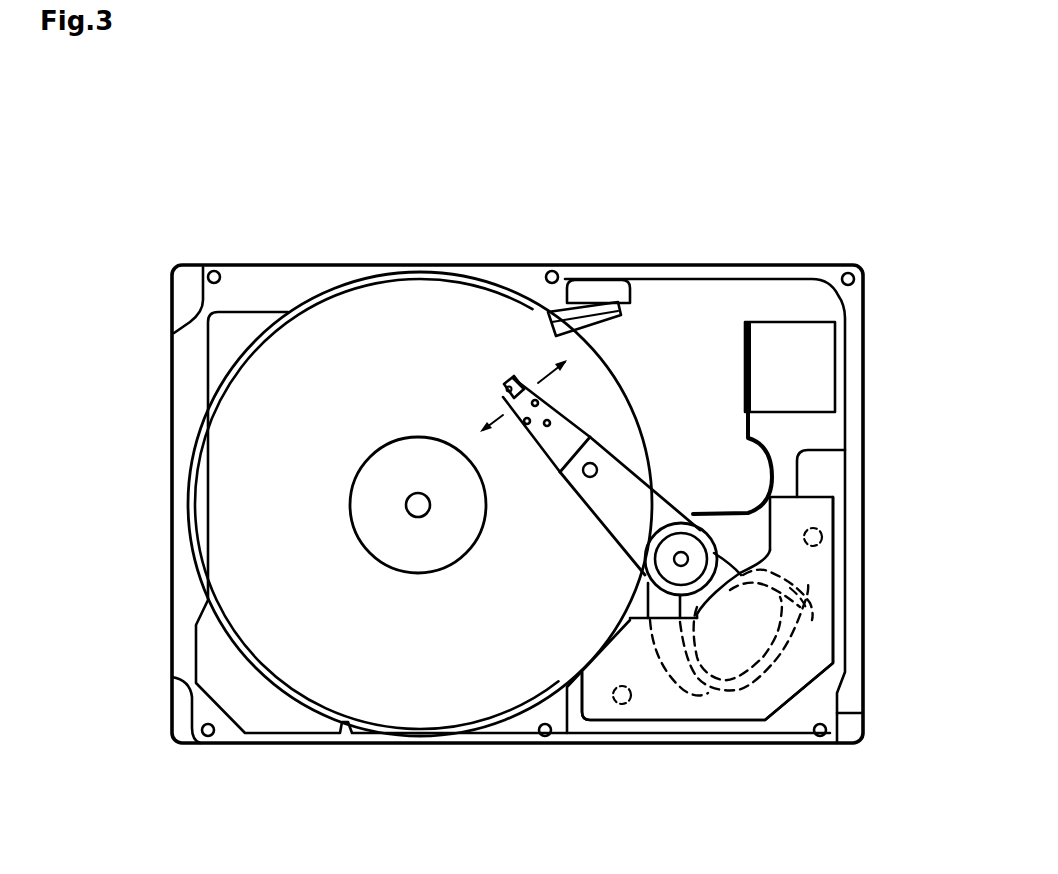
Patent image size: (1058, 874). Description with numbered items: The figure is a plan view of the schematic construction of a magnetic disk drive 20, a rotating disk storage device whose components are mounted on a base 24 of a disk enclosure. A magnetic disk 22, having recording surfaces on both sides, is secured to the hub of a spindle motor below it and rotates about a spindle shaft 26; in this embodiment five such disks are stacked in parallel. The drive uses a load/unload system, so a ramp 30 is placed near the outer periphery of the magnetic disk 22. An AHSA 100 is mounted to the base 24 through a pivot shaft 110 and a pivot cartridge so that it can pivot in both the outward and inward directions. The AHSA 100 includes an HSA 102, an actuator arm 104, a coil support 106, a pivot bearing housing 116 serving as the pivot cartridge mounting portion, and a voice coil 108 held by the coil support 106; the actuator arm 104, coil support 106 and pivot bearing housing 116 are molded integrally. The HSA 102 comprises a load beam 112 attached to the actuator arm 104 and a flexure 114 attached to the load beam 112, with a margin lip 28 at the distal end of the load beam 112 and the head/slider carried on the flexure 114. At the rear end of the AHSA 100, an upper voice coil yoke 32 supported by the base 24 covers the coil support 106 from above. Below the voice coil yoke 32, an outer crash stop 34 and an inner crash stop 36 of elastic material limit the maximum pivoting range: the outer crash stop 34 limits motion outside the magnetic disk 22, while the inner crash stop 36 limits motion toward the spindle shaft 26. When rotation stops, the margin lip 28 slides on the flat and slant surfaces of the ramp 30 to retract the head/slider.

The magnetic disk drive 20 is at (570, 210).
The magnetic disk 22 is at (223, 501).
The base 24 is at (690, 264).
The spindle shaft 26 is at (414, 512).
The margin lip 28 is at (510, 386).
The ramp 30 is at (622, 318).
The voice coil yoke 32 is at (836, 641).
The outer crash stop 34 is at (618, 705).
The inner crash stop 36 is at (822, 530).
The AHSA 100 is at (605, 418).
The HSA 102 is at (584, 405).
The actuator arm 104 is at (623, 507).
The coil support 106 is at (677, 680).
The voice coil 108 is at (790, 588).
The pivot shaft 110 is at (680, 556).
The load beam 112 is at (558, 443).
The flexure 114 is at (538, 383).
The pivot bearing housing 116 is at (697, 510).